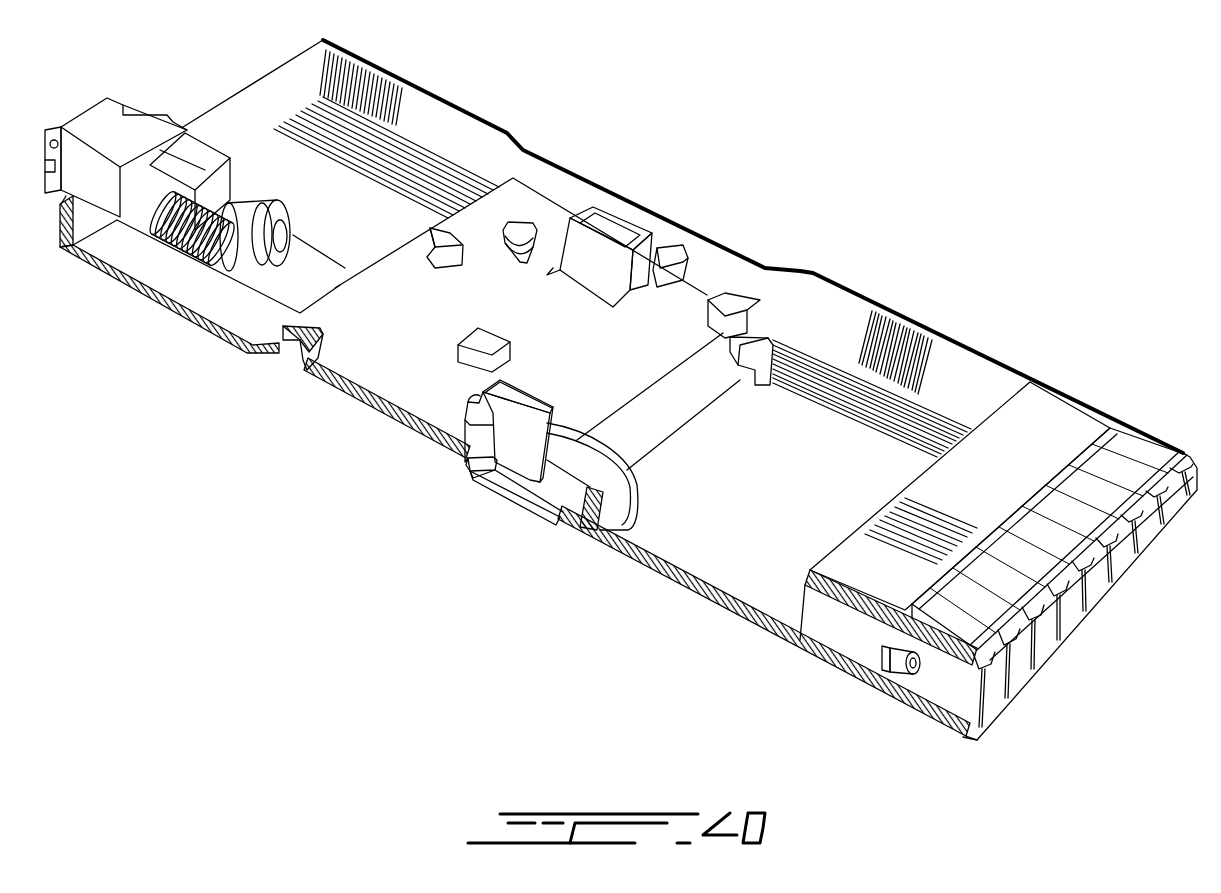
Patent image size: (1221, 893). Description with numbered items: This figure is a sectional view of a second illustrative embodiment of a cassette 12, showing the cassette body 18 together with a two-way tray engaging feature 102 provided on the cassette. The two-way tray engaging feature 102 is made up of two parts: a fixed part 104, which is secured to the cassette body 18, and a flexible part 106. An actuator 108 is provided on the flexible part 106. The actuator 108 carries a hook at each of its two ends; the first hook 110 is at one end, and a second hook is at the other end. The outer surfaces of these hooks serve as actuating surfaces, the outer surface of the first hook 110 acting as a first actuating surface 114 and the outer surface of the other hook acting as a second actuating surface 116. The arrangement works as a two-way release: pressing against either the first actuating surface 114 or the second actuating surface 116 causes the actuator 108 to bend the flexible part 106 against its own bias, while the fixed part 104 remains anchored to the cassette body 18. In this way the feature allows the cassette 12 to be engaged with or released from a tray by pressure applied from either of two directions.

The cassette 12 is at (847, 238).
The cassette body 18 is at (1040, 405).
The two-way tray engaging feature 102 is at (503, 482).
The fixed part 104 is at (573, 505).
The flexible part 106 is at (483, 467).
The actuator 108 is at (507, 433).
The first hook 110 is at (485, 480).
The first actuating surface 114 is at (512, 392).
The second actuating surface 116 is at (490, 470).